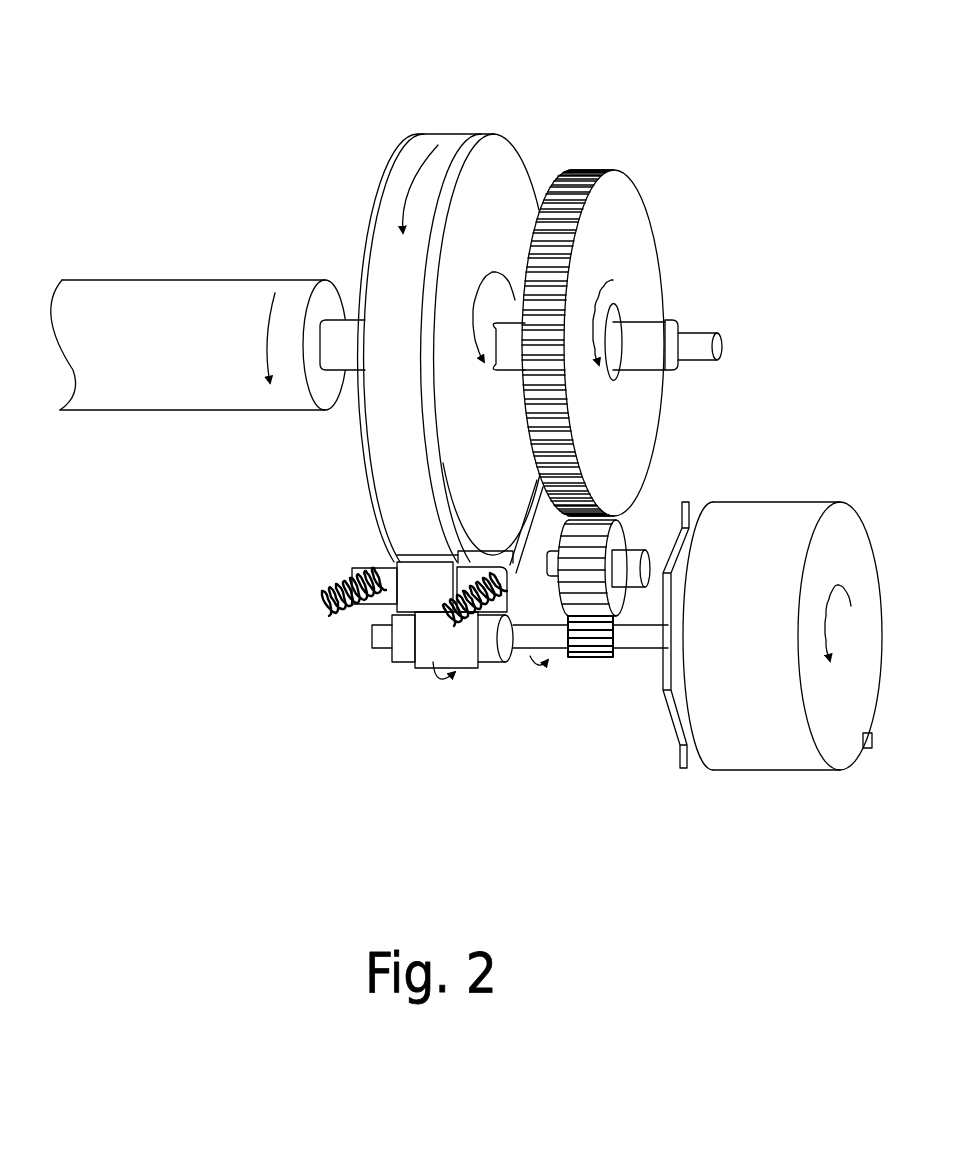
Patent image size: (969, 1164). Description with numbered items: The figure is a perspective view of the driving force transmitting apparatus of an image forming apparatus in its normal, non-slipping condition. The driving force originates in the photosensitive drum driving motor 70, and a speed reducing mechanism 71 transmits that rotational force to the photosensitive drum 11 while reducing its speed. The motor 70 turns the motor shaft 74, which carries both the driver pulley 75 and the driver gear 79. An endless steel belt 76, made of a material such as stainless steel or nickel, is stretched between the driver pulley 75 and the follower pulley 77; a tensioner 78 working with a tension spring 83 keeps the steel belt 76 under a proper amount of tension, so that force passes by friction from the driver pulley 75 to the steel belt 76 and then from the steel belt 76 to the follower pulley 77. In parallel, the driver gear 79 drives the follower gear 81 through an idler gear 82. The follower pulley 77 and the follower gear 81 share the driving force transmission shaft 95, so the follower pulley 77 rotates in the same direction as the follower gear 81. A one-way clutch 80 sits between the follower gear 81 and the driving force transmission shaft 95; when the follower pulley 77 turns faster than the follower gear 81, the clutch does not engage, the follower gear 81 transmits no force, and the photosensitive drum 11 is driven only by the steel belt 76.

The photosensitive drum 11 is at (153, 393).
The photosensitive drum driving motor 70 is at (757, 737).
The speed reducing mechanism 71 is at (442, 295).
The motor shaft 74 is at (636, 636).
The driver pulley 75 is at (400, 630).
The steel belt 76 is at (392, 197).
The follower pulley 77 is at (502, 168).
The tensioner 78 is at (404, 578).
The driver gear 79 is at (578, 658).
The one-way clutch 80 is at (623, 305).
The follower gear 81 is at (618, 192).
The idler gear 82 is at (637, 548).
The tension spring 83 is at (323, 610).
The driving force transmission shaft 95 is at (695, 342).